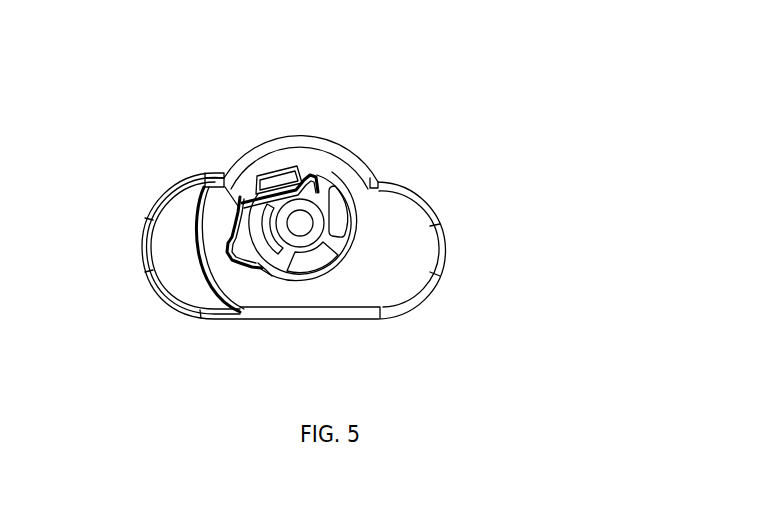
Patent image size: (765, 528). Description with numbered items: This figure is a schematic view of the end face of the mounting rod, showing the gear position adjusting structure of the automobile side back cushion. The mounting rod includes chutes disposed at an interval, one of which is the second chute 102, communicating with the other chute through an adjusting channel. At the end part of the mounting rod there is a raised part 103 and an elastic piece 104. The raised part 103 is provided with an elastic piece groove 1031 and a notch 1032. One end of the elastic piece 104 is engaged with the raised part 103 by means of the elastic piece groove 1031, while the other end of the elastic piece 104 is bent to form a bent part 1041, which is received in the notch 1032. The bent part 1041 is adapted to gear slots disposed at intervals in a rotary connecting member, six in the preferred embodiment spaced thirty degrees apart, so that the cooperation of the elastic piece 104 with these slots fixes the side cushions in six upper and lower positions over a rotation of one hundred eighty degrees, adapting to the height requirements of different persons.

The second chute 102 is at (296, 216).
The raised part 103 is at (320, 178).
The elastic piece groove 1031 is at (308, 156).
The notch 1032 is at (267, 282).
The elastic piece 104 is at (224, 172).
The bent part 1041 is at (231, 262).